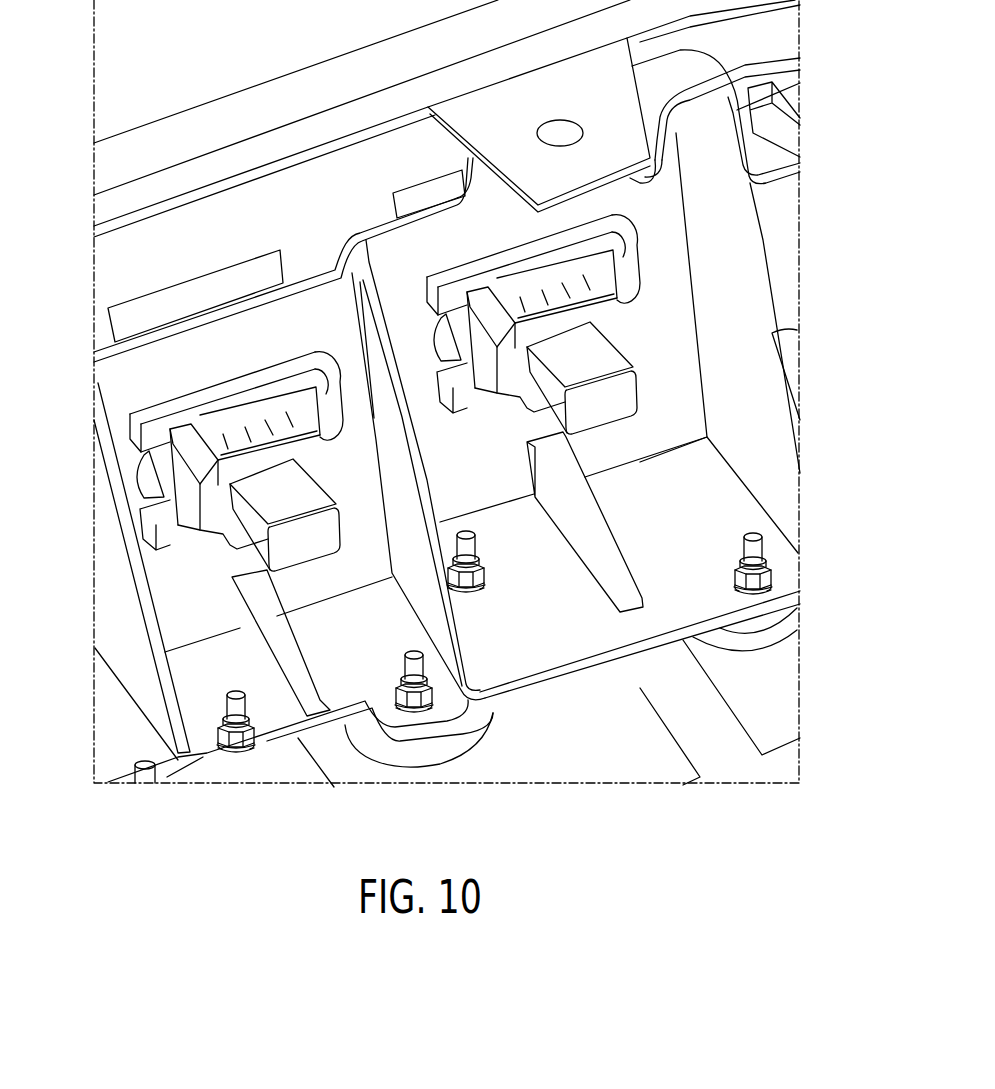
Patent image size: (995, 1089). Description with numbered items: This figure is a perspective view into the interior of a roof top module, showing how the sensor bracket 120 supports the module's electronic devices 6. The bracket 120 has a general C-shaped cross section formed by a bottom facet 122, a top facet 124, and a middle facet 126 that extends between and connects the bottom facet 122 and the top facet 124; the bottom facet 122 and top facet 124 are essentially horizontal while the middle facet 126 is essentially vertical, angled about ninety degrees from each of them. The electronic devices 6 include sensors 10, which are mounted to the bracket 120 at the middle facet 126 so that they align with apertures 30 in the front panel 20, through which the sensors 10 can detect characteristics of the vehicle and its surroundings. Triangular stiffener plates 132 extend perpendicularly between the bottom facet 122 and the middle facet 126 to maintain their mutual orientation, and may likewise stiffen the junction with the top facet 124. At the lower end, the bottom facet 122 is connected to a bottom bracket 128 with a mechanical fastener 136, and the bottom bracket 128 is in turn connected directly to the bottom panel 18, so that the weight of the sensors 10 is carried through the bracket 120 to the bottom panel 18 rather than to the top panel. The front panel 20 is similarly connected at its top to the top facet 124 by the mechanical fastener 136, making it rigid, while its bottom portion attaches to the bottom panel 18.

The electronic devices 6 is at (443, 393).
The sensors 10 is at (228, 417).
The bottom panel 18 is at (476, 712).
The front panel 20 is at (120, 258).
The apertures 30 is at (432, 198).
The bracket 120 is at (130, 382).
The bottom facet 122 is at (523, 663).
The top facet 124 is at (693, 60).
The middle facet 126 is at (340, 582).
The bottom bracket 128 is at (760, 703).
The stiffener plates 132 is at (115, 568).
The mechanical fastener 136 is at (422, 660).